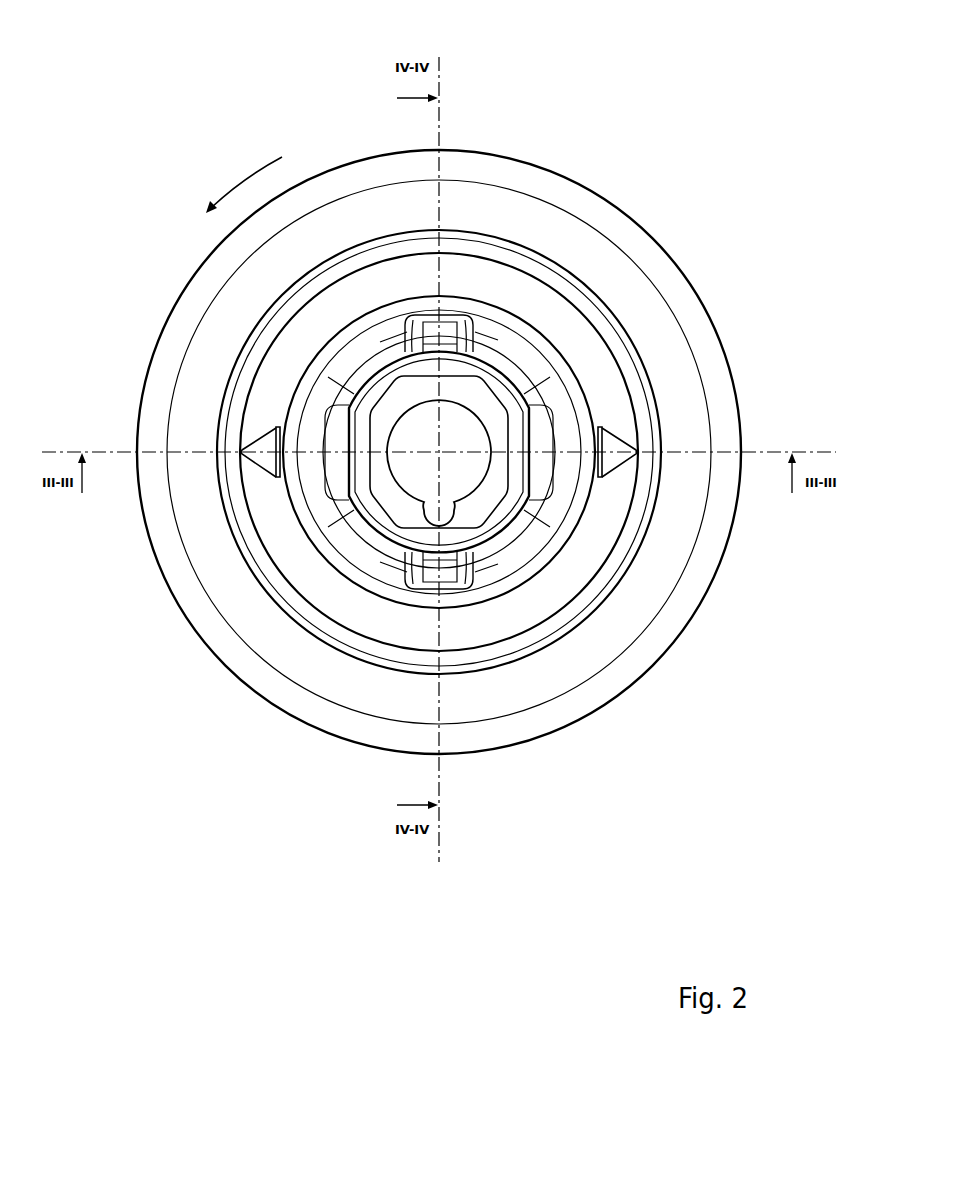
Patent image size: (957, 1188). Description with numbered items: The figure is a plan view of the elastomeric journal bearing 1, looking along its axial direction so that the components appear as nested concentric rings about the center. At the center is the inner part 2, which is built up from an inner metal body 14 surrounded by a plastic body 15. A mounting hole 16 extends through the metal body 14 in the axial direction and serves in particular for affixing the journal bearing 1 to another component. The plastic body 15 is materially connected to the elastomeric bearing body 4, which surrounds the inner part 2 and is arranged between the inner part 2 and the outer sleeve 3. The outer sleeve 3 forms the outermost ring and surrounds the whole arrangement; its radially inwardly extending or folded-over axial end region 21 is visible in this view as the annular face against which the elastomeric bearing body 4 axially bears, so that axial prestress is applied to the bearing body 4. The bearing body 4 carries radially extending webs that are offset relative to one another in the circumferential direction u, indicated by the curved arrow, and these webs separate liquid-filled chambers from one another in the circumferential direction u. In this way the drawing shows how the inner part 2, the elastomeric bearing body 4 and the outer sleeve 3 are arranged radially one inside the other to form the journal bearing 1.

The journal bearing 1 is at (211, 93).
The circumferential direction u is at (243, 182).
The inner part 2 is at (366, 377).
The outer sleeve 3 is at (638, 219).
The axial end region of the outer sleeve 21 is at (640, 283).
The elastomeric bearing body 4 is at (270, 522).
The inner metal body 14 is at (470, 390).
The plastic body 15 is at (393, 380).
The mounting hole 16 is at (413, 478).